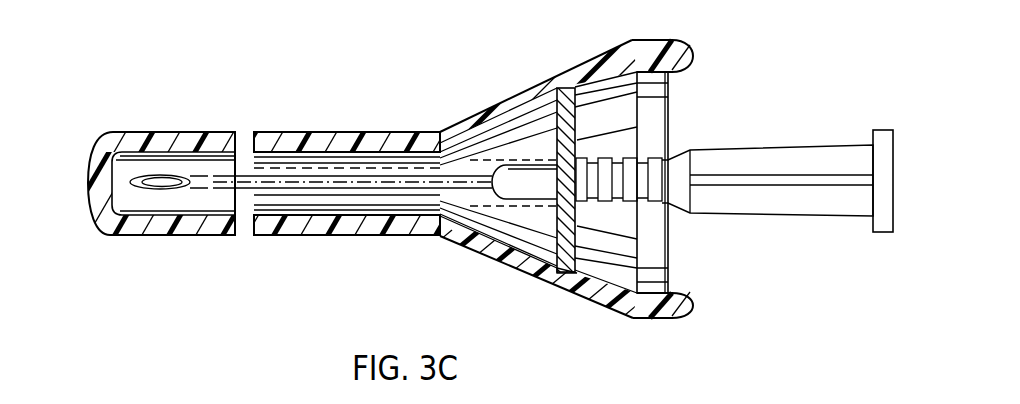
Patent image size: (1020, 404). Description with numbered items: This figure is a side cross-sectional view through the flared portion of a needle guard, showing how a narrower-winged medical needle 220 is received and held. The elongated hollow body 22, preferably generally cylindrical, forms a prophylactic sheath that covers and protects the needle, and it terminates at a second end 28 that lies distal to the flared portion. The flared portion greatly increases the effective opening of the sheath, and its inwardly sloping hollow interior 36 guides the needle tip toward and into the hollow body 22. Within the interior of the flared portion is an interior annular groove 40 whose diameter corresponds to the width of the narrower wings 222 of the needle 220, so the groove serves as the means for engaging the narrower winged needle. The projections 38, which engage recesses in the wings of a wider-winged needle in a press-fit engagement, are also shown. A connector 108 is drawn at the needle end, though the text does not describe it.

The second end 28 is at (96, 150).
The elongated hollow body 22 is at (338, 236).
The narrower winged needle 220 is at (462, 178).
The hollow interior 36 is at (510, 240).
The interior annular groove 40 is at (566, 273).
The projections 38 is at (700, 50).
The narrower wings 222 is at (600, 135).
The connector 108 is at (808, 200).